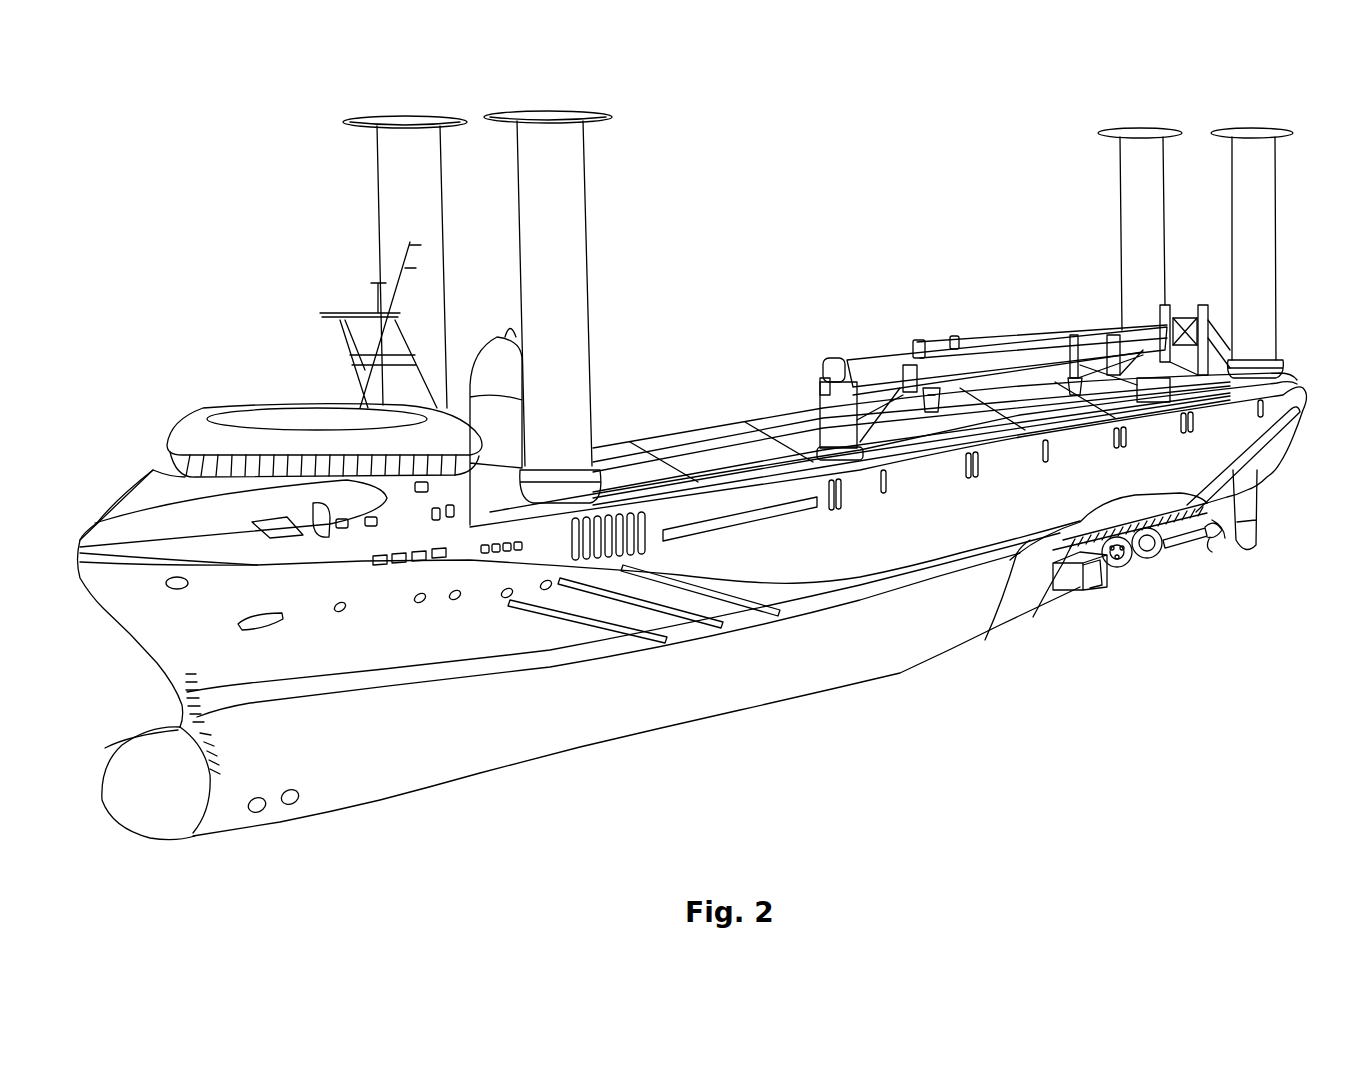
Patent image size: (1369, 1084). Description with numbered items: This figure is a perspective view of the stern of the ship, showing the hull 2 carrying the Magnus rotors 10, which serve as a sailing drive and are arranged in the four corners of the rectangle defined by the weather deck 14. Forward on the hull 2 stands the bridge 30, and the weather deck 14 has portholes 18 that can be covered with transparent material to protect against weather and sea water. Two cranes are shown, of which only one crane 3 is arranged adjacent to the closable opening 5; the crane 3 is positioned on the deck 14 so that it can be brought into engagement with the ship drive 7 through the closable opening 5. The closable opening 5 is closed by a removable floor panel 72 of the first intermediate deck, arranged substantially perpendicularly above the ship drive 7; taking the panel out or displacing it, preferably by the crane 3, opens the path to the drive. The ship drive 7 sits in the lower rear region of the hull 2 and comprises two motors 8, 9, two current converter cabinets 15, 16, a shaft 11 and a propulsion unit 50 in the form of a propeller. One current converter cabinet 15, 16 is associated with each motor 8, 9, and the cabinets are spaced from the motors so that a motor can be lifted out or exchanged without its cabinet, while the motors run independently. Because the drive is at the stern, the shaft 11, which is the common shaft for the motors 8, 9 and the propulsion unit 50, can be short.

The hull 2 is at (708, 481).
The crane 3 is at (1178, 395).
The closable opening 5 is at (1112, 297).
The ship drive 7 is at (1130, 607).
The motor 8 is at (1154, 567).
The motor 9 is at (1127, 575).
The Magnus rotor 10 is at (362, 189).
The shaft 11 is at (1172, 549).
The weather deck 14 is at (664, 440).
The current converter cabinet 15 is at (1092, 590).
The current converter cabinet 16 is at (1063, 600).
The portholes 18 is at (478, 553).
The bridge 30 is at (241, 390).
The propulsion unit 50 is at (1219, 544).
The removable floor panel 72 is at (985, 640).